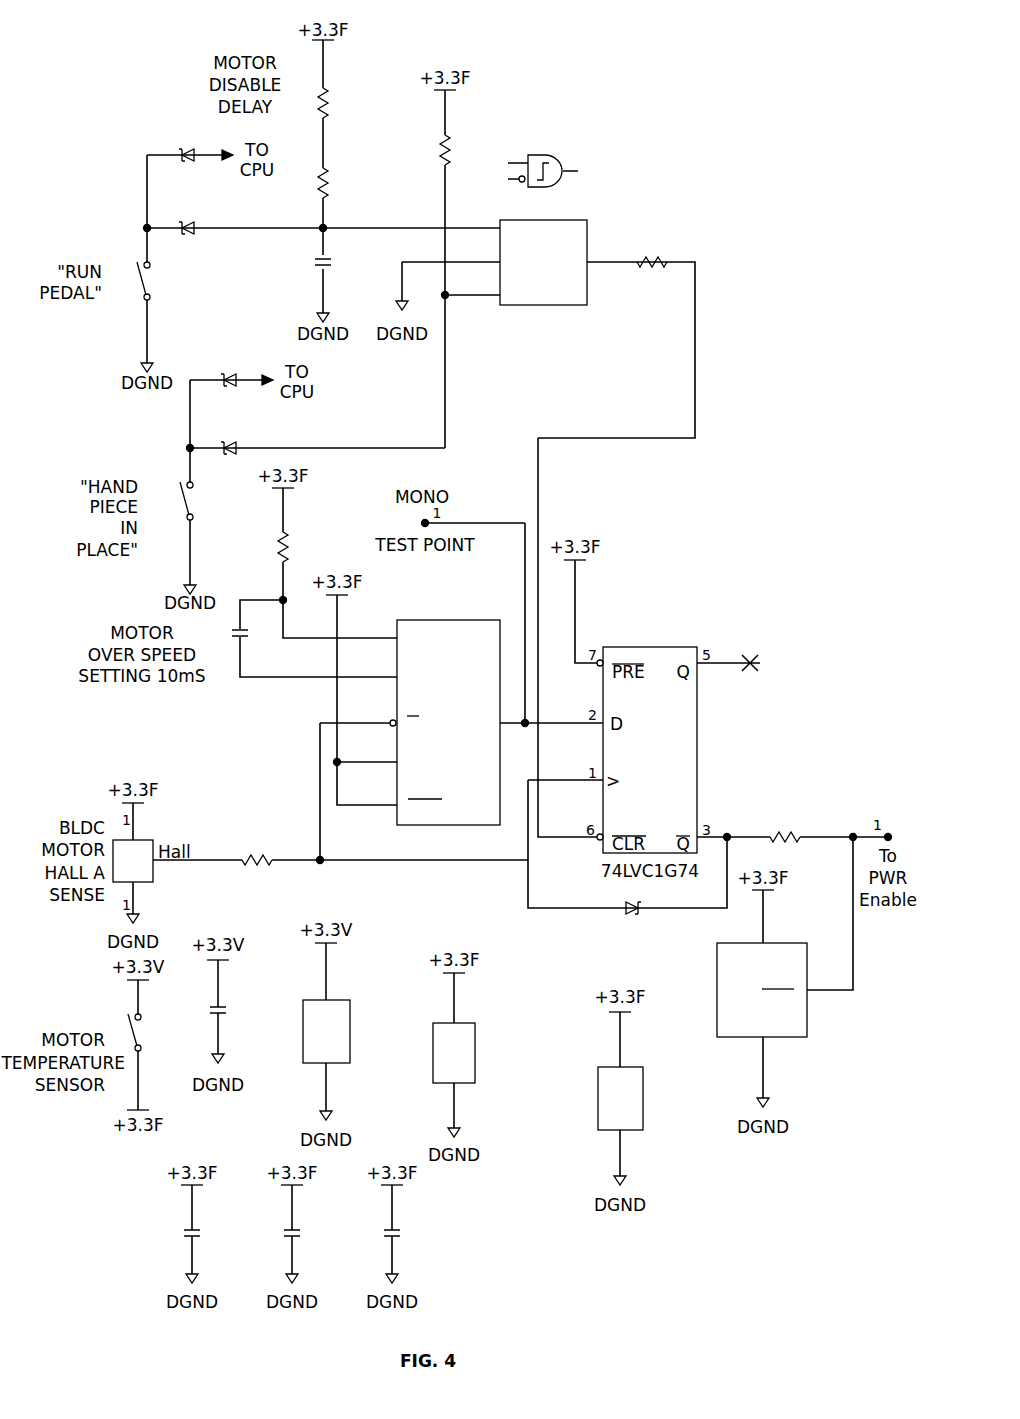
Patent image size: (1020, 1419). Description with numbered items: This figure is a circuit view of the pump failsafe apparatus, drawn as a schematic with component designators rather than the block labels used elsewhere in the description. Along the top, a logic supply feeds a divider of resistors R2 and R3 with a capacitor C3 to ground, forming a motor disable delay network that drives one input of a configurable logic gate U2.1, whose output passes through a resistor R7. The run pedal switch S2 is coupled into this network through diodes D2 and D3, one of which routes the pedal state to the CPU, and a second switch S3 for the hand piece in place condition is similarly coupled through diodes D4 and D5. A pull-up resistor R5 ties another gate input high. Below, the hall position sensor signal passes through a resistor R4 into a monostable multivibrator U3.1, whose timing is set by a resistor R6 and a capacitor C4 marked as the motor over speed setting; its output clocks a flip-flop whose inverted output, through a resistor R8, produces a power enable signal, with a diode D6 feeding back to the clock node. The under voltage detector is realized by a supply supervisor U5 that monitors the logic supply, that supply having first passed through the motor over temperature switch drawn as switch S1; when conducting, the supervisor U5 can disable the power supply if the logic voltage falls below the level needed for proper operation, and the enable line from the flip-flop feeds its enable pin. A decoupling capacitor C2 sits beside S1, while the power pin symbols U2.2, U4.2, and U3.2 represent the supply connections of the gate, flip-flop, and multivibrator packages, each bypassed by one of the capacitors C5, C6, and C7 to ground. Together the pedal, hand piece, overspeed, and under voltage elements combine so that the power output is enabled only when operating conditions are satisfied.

The resistor 470K R2 is at (335, 92).
The resistor 470K R3 is at (335, 186).
The capacitor 2.2uF C3 is at (333, 274).
The diode BAT54 D2 is at (191, 154).
The diode BAT54 D3 is at (191, 230).
The run pedal switch S2 is at (132, 301).
The diode BAT54 D4 is at (232, 379).
The diode BAT54 D5 is at (232, 447).
The hand piece in place switch S3 is at (174, 520).
The resistor 10.0K R5 is at (458, 145).
The 74LVC1G97 configurable gate U2.1 is at (544, 269).
The resistor 10.0K R7 is at (653, 262).
The resistor 10K R6 is at (288, 540).
The capacitor 1uF C4 is at (241, 638).
The 74LVC1G123 monostable multivibrator U3.1 is at (447, 724).
The resistor 3.92K R8 is at (785, 837).
The diode BAT54 D6 is at (632, 910).
The MIC803 supervisor U5 is at (783, 1001).
The resistor 10.0K R4 is at (255, 860).
The motor temperature sensor switch S1 is at (137, 1047).
The capacitor 0.1uF C2 is at (230, 1013).
The 74LVC1G97 power pins U2.2 is at (357, 1032).
The 74LVC1G74 power pins U4.2 is at (485, 1056).
The 74LVC1G123 power pins U3.2 is at (656, 1101).
The capacitor 0.1uF C5 is at (204, 1236).
The capacitor 0.1uF C6 is at (304, 1236).
The capacitor 0.1uF C7 is at (404, 1236).